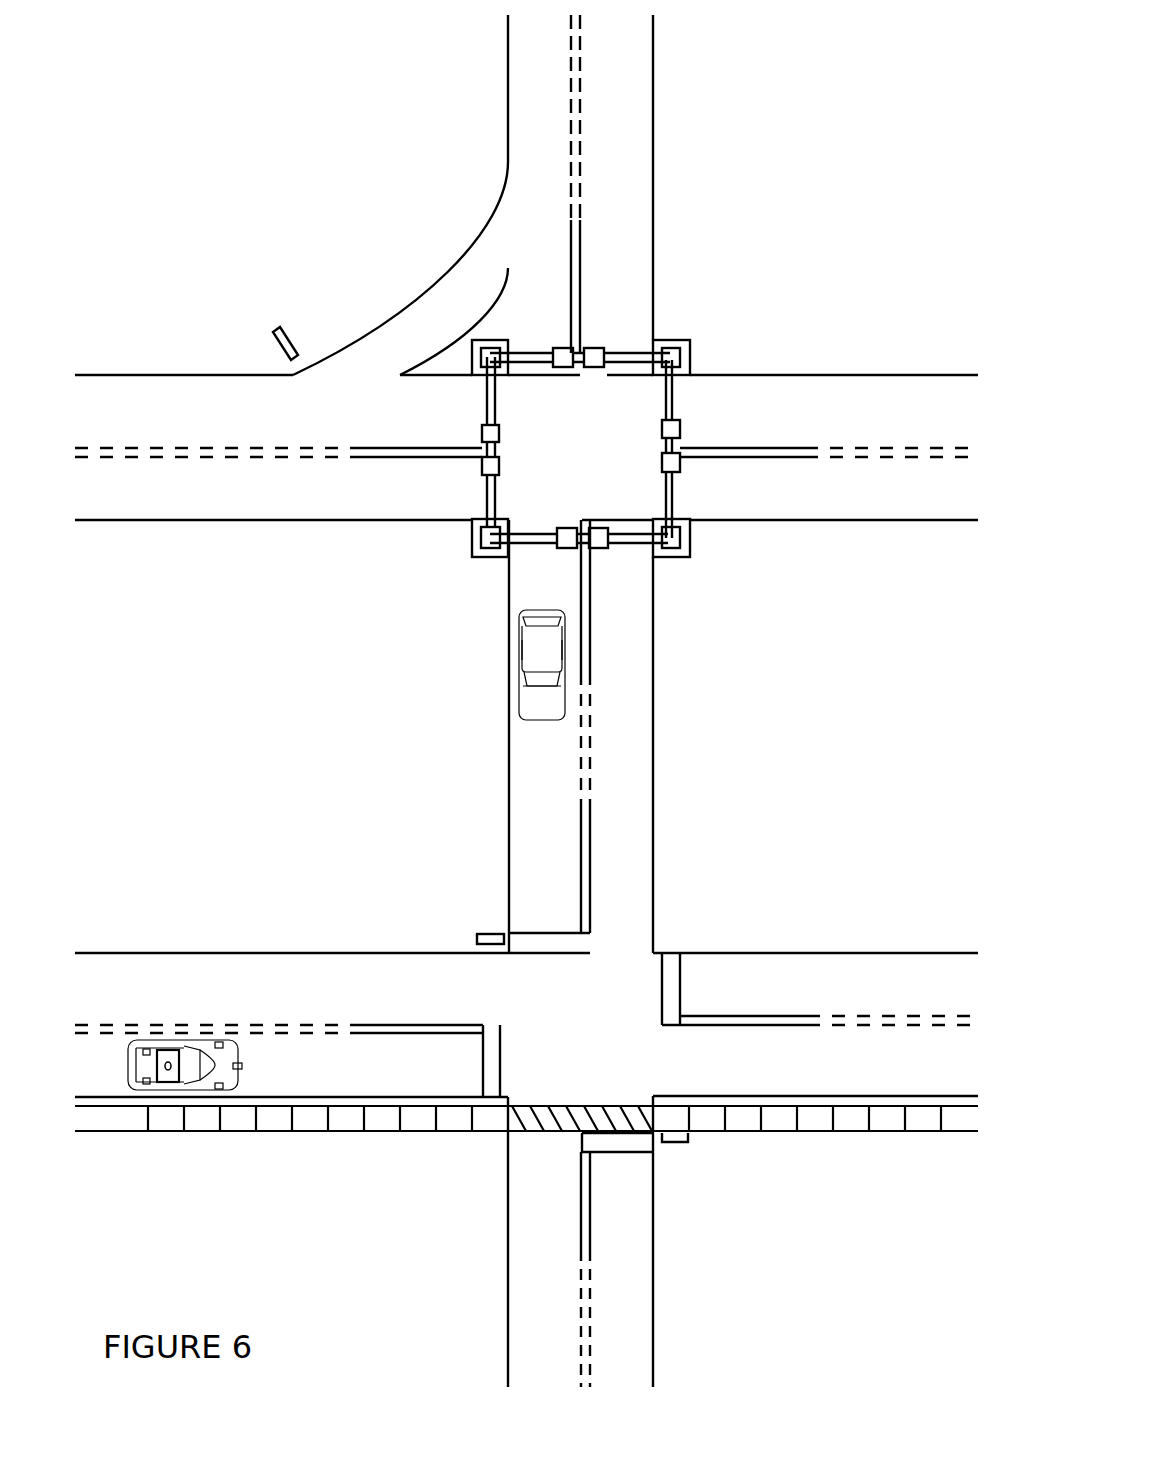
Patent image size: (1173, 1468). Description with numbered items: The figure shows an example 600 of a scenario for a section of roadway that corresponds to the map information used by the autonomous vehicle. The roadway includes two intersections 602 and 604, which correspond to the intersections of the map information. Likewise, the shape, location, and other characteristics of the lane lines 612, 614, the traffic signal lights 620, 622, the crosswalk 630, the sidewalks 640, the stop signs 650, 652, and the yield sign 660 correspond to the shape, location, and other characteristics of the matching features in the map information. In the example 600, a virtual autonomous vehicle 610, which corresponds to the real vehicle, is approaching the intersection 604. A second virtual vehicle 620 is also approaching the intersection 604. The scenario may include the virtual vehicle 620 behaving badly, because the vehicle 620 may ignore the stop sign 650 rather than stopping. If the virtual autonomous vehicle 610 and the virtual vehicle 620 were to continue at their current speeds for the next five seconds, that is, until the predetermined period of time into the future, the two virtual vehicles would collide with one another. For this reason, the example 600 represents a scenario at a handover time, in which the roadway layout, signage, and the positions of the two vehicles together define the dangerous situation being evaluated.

The example 600 is at (526, 701).
The intersection 602 is at (581, 448).
The intersection 604 is at (580, 1024).
The virtual autonomous vehicle 610 is at (177, 1050).
The lane line 612 is at (235, 1097).
The lane line 614 is at (582, 123).
The virtual vehicle 620 is at (480, 465).
The traffic signal light 622 is at (480, 431).
The crosswalk 630 is at (507, 1113).
The sidewalk 640 is at (812, 1105).
The stop sign 650 is at (490, 934).
The stop sign 652 is at (688, 1142).
The yield sign 660 is at (273, 340).